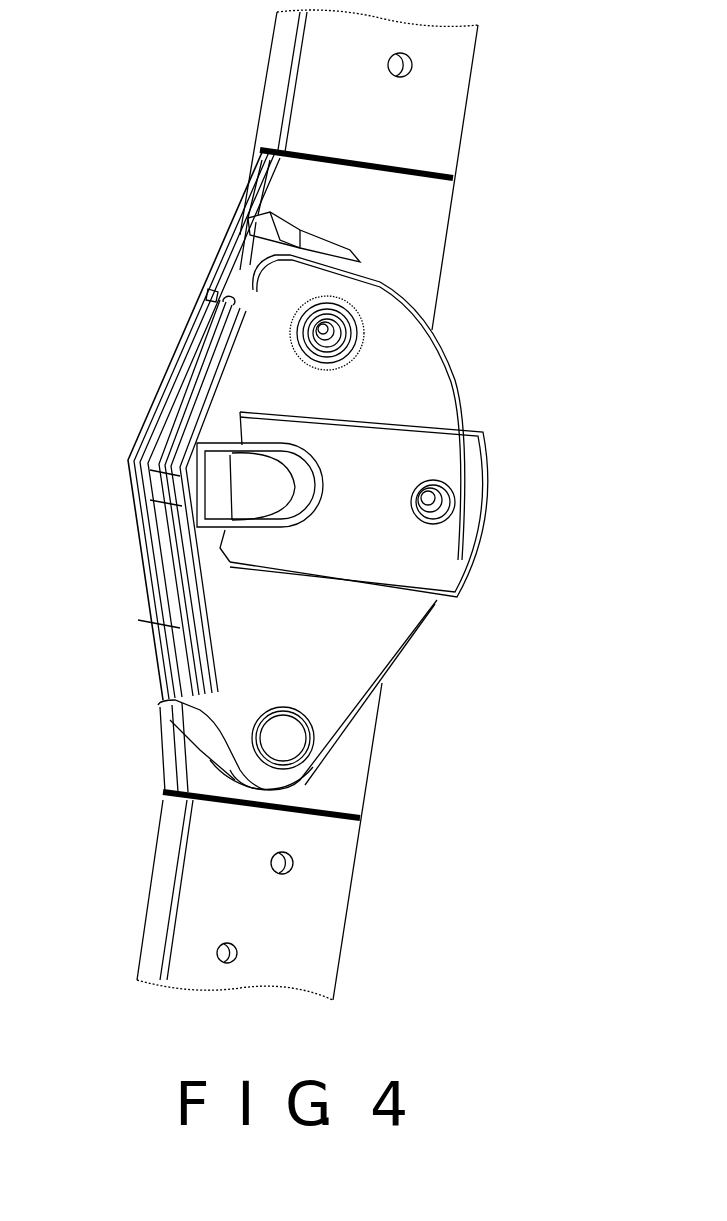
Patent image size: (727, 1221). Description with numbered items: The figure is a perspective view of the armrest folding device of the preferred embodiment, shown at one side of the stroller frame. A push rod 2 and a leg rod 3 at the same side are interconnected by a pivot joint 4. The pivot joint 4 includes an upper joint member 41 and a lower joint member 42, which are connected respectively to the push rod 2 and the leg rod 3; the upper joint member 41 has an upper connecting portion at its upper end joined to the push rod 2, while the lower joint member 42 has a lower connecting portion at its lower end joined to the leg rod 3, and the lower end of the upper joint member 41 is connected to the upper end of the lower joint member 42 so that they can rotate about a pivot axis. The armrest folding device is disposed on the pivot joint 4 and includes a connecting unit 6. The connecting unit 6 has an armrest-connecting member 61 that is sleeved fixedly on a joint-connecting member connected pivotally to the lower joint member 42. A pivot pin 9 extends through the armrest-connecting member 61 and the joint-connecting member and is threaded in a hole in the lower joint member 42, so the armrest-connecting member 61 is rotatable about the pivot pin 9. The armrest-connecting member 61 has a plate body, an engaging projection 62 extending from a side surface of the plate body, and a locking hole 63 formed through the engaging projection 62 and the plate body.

The push rod 2 is at (438, 135).
The leg rod 3 is at (316, 872).
The pivot joint 4 is at (113, 450).
The upper joint member 41 is at (222, 283).
The lower joint member 42 is at (163, 740).
The connecting unit 6 is at (448, 325).
The armrest-connecting member 61 is at (437, 413).
The engaging projection 62 is at (445, 553).
The locking hole 63 is at (259, 483).
The pivot pin 9 is at (290, 738).